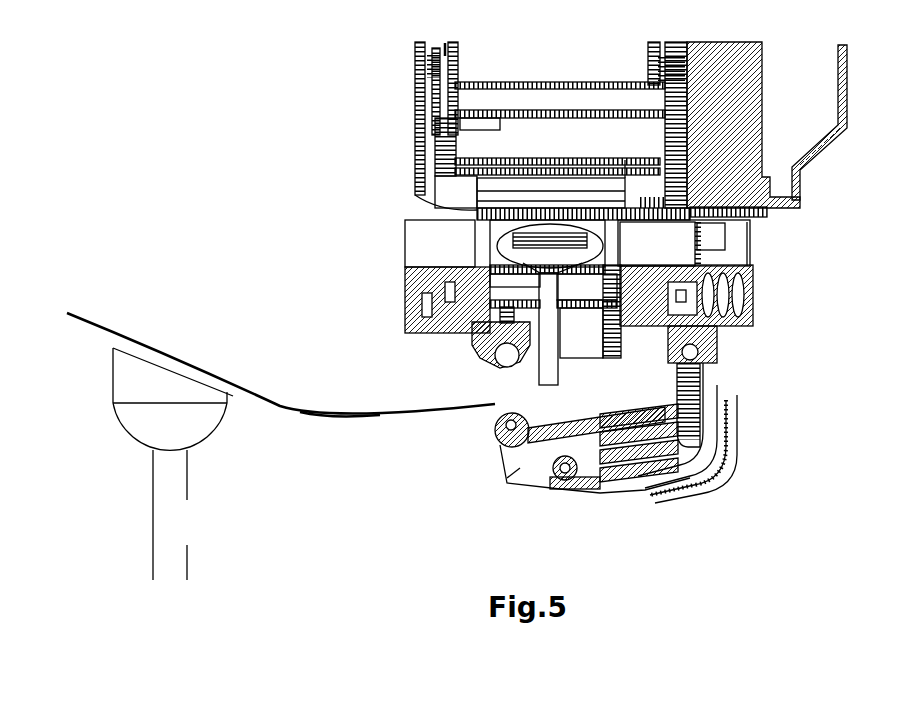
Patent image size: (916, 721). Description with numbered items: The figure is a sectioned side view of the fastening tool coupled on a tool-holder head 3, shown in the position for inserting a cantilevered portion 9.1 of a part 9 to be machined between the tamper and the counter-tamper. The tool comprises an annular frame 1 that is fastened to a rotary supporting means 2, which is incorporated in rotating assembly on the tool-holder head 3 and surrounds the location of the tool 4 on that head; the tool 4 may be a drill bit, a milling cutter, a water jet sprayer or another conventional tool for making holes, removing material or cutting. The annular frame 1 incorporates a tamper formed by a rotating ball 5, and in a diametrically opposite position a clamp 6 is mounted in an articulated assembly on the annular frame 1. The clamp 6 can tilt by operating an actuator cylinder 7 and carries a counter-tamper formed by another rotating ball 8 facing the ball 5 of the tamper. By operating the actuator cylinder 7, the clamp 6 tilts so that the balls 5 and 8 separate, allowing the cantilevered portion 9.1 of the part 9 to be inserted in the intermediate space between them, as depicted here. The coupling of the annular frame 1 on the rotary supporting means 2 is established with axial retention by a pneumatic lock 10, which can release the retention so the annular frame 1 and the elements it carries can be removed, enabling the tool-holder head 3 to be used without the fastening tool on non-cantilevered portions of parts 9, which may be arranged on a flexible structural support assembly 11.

The annular frame 1 is at (712, 335).
The rotary supporting means 2 is at (755, 268).
The tool-holder head 3 is at (420, 103).
The tool 4 is at (560, 363).
The rotating ball 5 is at (500, 360).
The clamp 6 is at (722, 490).
The actuator cylinder 7 is at (650, 458).
The rotating ball 8 is at (503, 457).
The part to be machined 9 is at (98, 330).
The cantilevered portion 9.1 is at (338, 410).
The pneumatic lock 10 is at (712, 350).
The flexible structural support assembly 11 is at (168, 505).